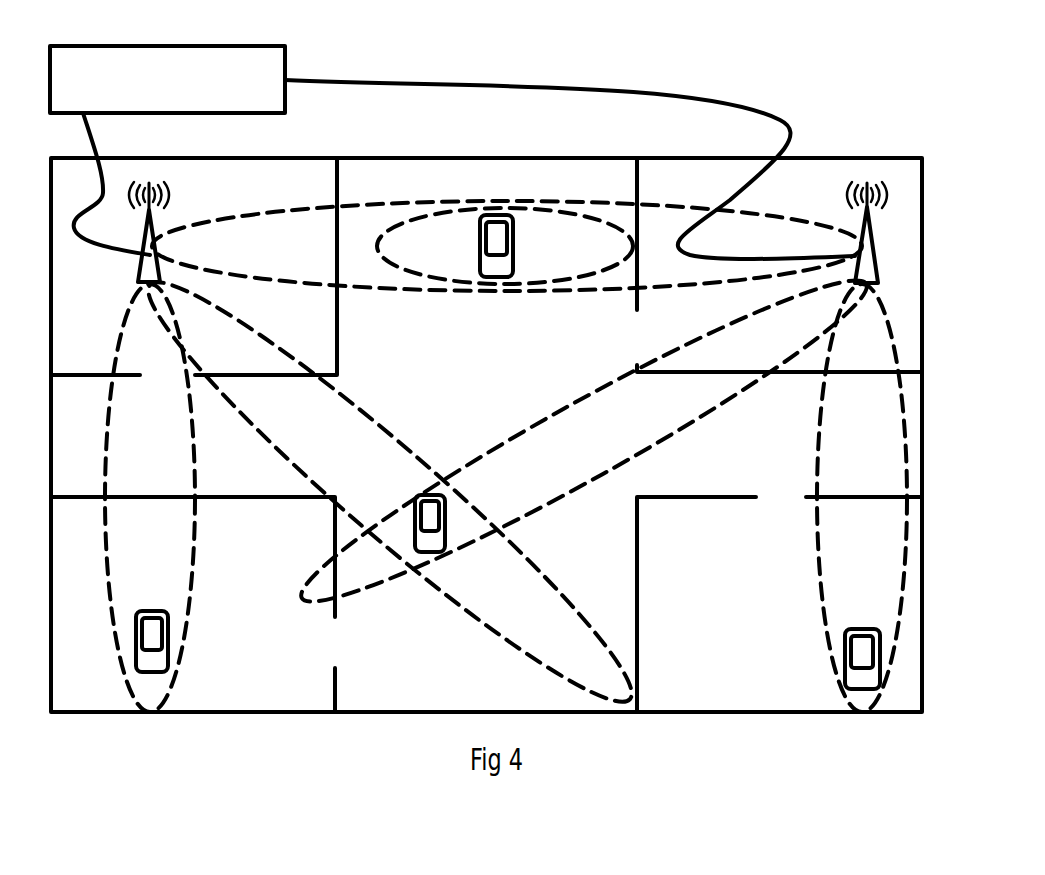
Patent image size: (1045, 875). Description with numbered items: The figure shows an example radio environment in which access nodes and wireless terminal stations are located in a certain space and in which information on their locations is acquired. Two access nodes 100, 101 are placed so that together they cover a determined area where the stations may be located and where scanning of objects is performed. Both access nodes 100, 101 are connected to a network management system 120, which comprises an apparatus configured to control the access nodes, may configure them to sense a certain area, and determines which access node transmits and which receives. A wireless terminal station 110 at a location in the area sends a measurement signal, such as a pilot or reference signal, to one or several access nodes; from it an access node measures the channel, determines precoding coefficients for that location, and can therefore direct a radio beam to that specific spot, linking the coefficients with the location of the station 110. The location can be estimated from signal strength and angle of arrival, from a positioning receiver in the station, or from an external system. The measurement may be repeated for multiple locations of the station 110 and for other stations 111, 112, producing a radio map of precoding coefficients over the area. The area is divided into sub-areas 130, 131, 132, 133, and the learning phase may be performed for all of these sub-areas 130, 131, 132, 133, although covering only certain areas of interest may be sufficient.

The access node 100 is at (143, 270).
The access node 101 is at (875, 252).
The wireless terminal station 110 is at (480, 258).
The wireless terminal station 111 is at (845, 670).
The wireless terminal station 112 is at (136, 665).
The network management system 120 is at (452, 152).
The sub-area 130 is at (337, 328).
The sub-area 131 is at (888, 157).
The sub-area 132 is at (750, 712).
The sub-area 133 is at (335, 668).